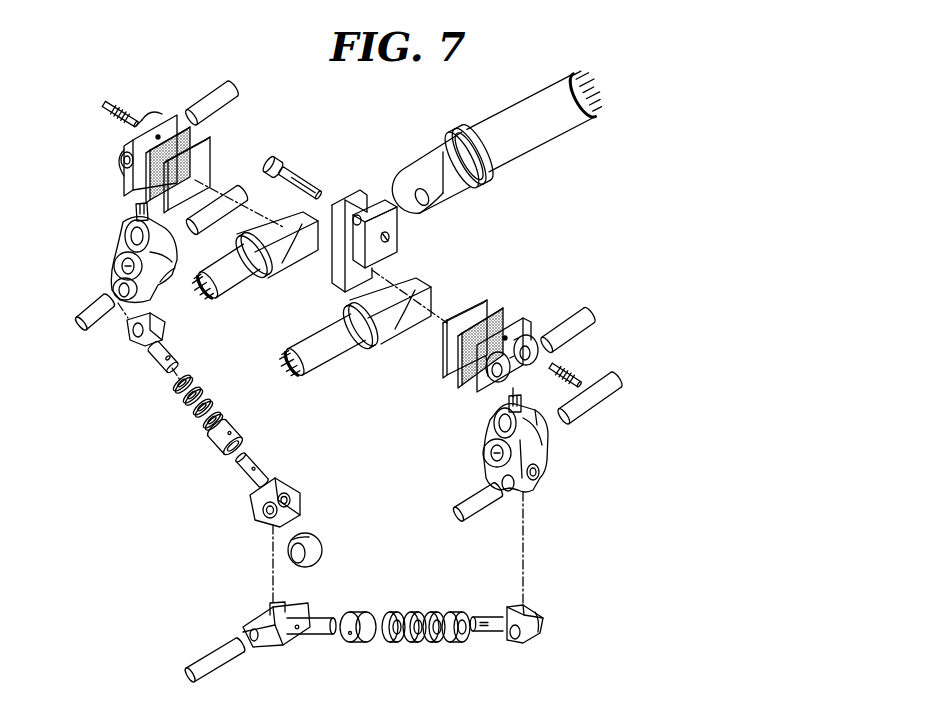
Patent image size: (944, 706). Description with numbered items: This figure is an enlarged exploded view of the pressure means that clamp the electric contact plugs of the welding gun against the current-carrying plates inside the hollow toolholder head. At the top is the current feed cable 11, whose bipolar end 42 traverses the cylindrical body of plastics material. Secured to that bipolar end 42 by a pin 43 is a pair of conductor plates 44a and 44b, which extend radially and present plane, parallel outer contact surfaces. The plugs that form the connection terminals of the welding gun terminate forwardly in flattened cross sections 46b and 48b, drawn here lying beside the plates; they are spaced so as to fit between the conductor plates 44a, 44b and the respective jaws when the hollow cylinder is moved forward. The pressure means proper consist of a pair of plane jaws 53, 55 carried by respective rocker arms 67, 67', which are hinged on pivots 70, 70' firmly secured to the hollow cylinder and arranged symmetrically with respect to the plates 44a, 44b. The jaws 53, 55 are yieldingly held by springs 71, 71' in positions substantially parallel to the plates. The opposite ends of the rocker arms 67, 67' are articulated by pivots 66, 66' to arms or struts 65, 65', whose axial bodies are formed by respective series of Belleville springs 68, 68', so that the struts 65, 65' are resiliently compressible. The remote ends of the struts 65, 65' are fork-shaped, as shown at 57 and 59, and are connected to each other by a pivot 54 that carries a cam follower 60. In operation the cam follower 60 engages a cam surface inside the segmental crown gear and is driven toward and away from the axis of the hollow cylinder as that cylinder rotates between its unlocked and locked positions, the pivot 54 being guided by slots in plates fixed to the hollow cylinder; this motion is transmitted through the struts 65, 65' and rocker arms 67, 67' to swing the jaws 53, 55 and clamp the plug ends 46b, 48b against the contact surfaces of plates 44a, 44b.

The current feed cable 11 is at (553, 113).
The bipolar end 42 is at (447, 167).
The pin 43 is at (290, 177).
The conductor plate 44a is at (350, 200).
The conductor plate 44b is at (388, 220).
The flattened cross section of plug 46b is at (308, 240).
The flattened cross section of plug 48b is at (412, 306).
The plane jaw 53 is at (165, 110).
The pivot 54 is at (213, 660).
The plane jaw 55 is at (510, 305).
The fork-shaped end 57 is at (263, 503).
The fork-shaped end 59 is at (268, 647).
The cam follower 60 is at (317, 550).
The strut 65 is at (392, 651).
The strut 65' is at (176, 429).
The pivot 66 is at (478, 521).
The pivot 66' is at (95, 341).
The rocker arm 67 is at (544, 456).
The rocker arm 67' is at (110, 253).
The Belleville springs 68 is at (448, 658).
The Belleville springs 68' is at (212, 464).
The pivot 70 is at (581, 380).
The pivot 70' is at (226, 157).
The spring 71 is at (580, 365).
The spring 71' is at (95, 128).